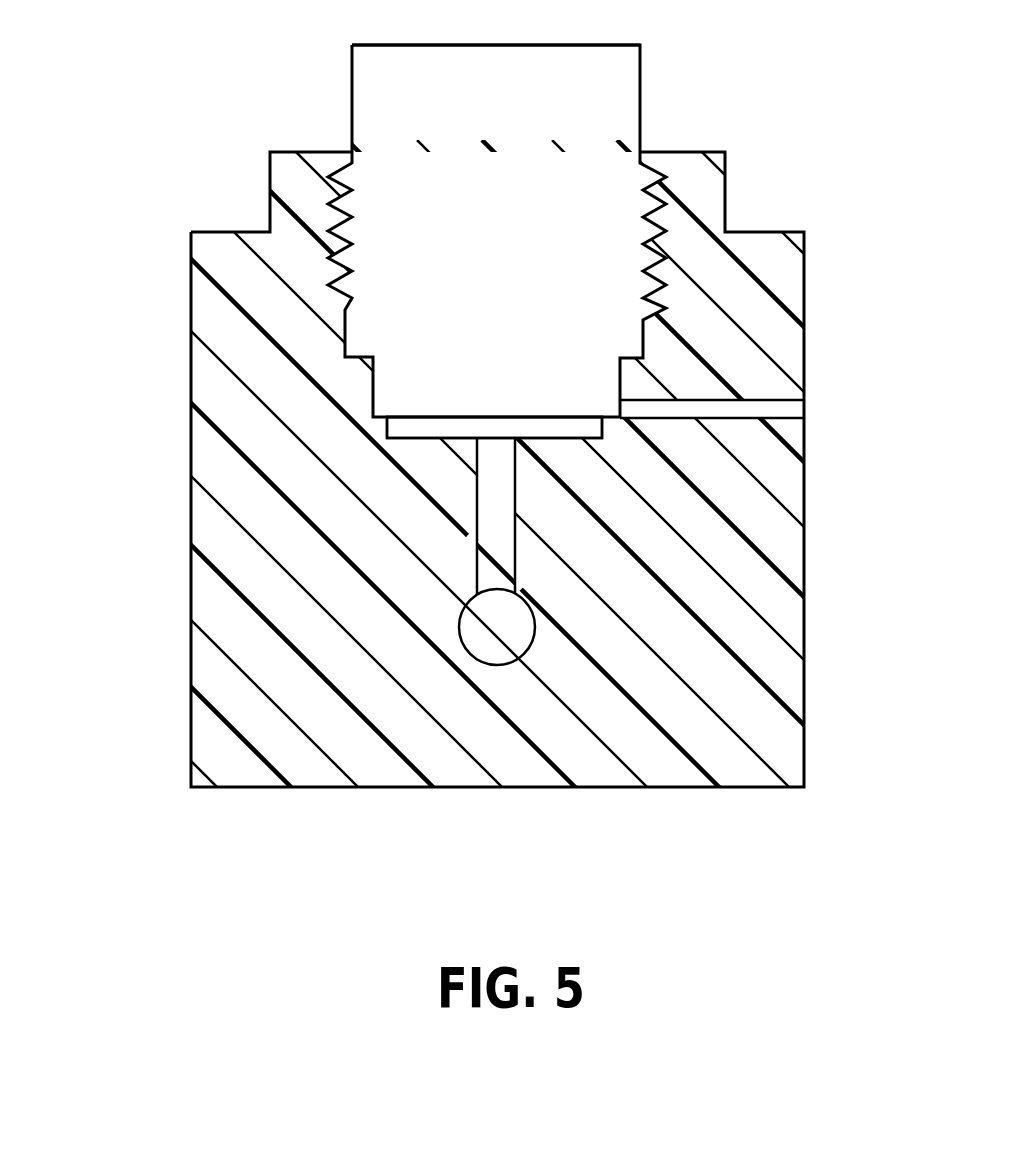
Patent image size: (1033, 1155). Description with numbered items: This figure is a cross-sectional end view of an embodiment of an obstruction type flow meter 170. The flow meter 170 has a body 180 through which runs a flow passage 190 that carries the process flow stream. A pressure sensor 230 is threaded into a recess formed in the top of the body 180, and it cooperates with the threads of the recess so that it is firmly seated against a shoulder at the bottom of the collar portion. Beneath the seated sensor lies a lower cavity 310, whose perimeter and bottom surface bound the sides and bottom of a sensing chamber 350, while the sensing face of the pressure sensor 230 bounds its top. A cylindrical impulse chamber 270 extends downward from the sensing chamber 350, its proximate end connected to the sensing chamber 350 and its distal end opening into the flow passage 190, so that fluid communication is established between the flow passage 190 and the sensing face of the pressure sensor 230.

The obstruction type flow meter 170 is at (172, 105).
The body 180 is at (182, 300).
The pressure sensor 230 is at (527, 263).
The lower cavity 310 is at (430, 420).
The sensing chamber 350 is at (494, 427).
The impulse chamber 270 is at (497, 527).
The flow passage 190 is at (537, 633).